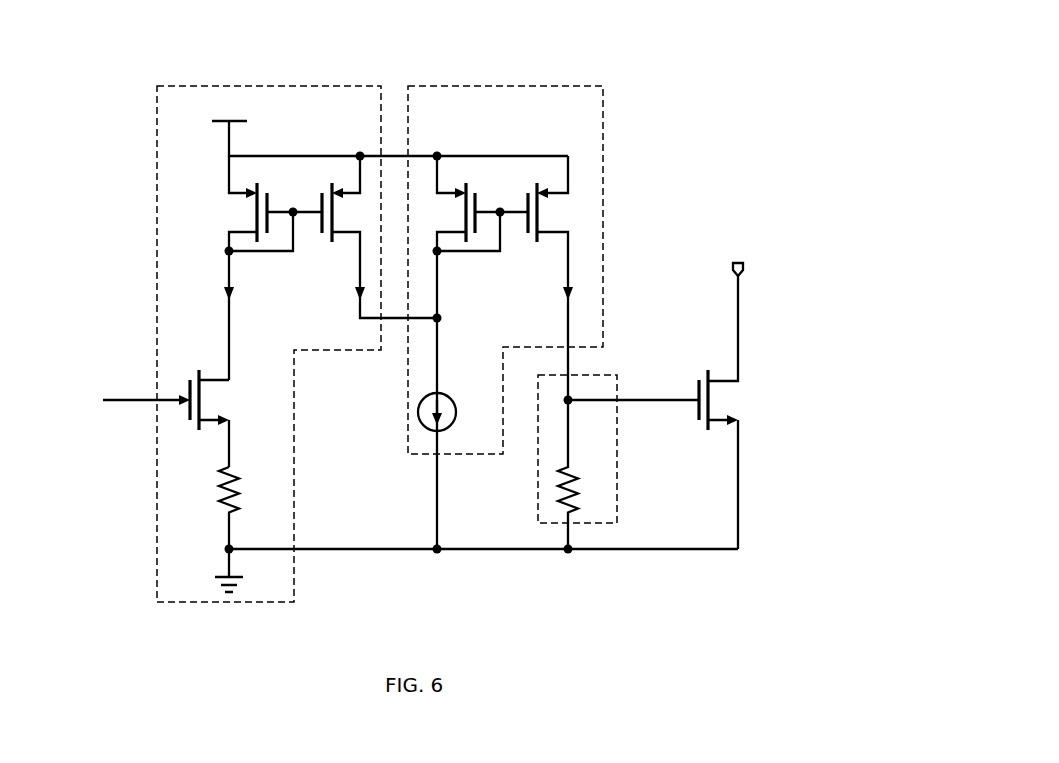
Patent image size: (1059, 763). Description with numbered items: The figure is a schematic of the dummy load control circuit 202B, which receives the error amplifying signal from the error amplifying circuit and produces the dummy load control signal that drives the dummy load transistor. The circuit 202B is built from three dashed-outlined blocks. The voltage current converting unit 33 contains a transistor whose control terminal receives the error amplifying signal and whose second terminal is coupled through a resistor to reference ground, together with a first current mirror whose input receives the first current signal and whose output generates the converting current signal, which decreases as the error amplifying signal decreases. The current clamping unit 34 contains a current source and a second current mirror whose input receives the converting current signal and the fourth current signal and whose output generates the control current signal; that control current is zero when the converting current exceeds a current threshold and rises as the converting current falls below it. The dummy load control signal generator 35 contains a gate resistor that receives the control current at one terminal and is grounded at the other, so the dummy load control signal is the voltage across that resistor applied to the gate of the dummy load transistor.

The dummy load control circuit 202B is at (564, 56).
The voltage current converting unit 33 is at (157, 211).
The current clamping unit 34 is at (605, 197).
The dummy load control signal generator 35 is at (617, 375).